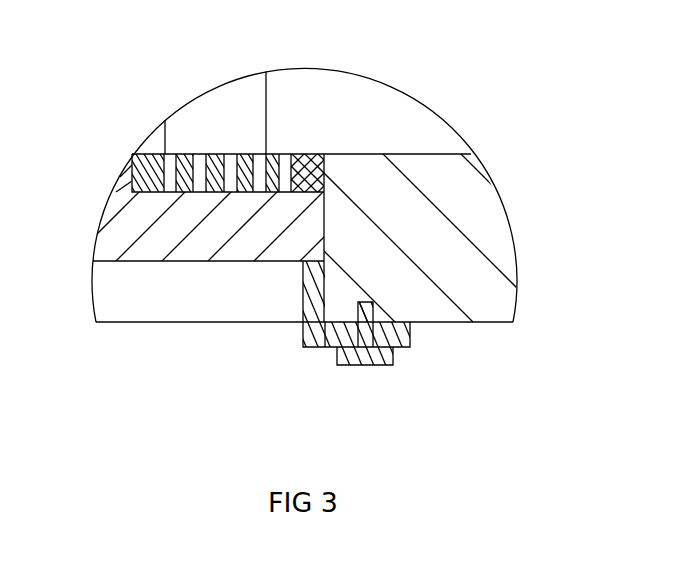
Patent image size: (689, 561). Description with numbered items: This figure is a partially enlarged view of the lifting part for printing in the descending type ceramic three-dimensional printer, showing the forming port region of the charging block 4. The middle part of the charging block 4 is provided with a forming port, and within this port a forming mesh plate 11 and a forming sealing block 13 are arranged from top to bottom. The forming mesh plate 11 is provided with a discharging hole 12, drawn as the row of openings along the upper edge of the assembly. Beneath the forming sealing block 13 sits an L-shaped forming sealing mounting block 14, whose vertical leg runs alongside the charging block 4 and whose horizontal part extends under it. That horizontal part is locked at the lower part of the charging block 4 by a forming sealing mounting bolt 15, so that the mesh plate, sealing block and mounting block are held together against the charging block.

The charging block 4 is at (435, 240).
The forming mesh plate 11 is at (313, 163).
The discharging hole 12 is at (228, 172).
The forming sealing block 13 is at (117, 243).
The forming sealing mounting block 14 is at (312, 280).
The forming sealing mounting bolt 15 is at (353, 338).